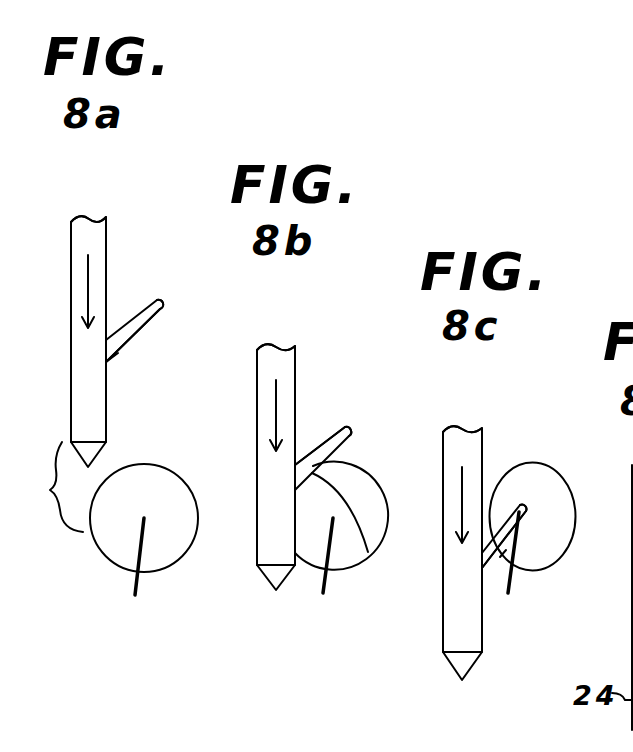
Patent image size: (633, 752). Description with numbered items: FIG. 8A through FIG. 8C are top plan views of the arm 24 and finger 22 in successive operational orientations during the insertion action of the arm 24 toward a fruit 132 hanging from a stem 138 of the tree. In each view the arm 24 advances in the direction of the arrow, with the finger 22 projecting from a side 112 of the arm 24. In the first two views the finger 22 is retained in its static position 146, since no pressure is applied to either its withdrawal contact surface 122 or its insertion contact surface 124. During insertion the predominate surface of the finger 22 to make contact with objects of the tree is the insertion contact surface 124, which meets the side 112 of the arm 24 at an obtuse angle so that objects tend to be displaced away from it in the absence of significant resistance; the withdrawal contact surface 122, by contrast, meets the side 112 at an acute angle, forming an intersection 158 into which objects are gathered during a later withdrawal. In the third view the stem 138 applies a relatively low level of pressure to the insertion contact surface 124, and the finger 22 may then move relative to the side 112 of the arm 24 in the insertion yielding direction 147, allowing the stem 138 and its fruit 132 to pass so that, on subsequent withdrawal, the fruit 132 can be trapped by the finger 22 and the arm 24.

In FIG. 8A, the arm 24 is at (107, 400).
In FIG. 8B, the arm 24 is at (257, 473).
In FIG. 8C, the arm 24 is at (443, 627).
In FIG. 8A, the side of arm 112 is at (107, 230).
In FIG. 8B, the side of arm 112 is at (297, 355).
In FIG. 8C, the side of arm 112 is at (482, 647).
In FIG. 8A, the intersection 158 is at (115, 323).
In FIG. 8B, the intersection 158 is at (303, 450).
In FIG. 8C, the intersection 158 is at (490, 533).
In FIG. 8A, the withdrawal contact surface 122 is at (143, 300).
In FIG. 8B, the withdrawal contact surface 122 is at (338, 431).
In FIG. 8C, the withdrawal contact surface 122 is at (482, 478).
In FIG. 8A, the finger 22 is at (158, 314).
In FIG. 8B, the finger 22 is at (348, 434).
In FIG. 8C, the finger 22 is at (527, 507).
In FIG. 8A, the insertion contact surface 124 is at (142, 330).
In FIG. 8B, the insertion contact surface 124 is at (327, 452).
In FIG. 8C, the insertion contact surface 124 is at (512, 538).
In FIG. 8A, the static position 146 is at (140, 346).
In FIG. 8B, the static position 146 is at (368, 551).
In FIG. 8C, the insertion yielding direction 147 is at (500, 557).
In FIG. 8A, the fruit 132 is at (111, 562).
In FIG. 8B, the fruit 132 is at (317, 570).
In FIG. 8C, the fruit 132 is at (493, 567).
In FIG. 8A, the stem 138 is at (140, 578).
In FIG. 8B, the stem 138 is at (326, 578).
In FIG. 8C, the stem 138 is at (512, 593).